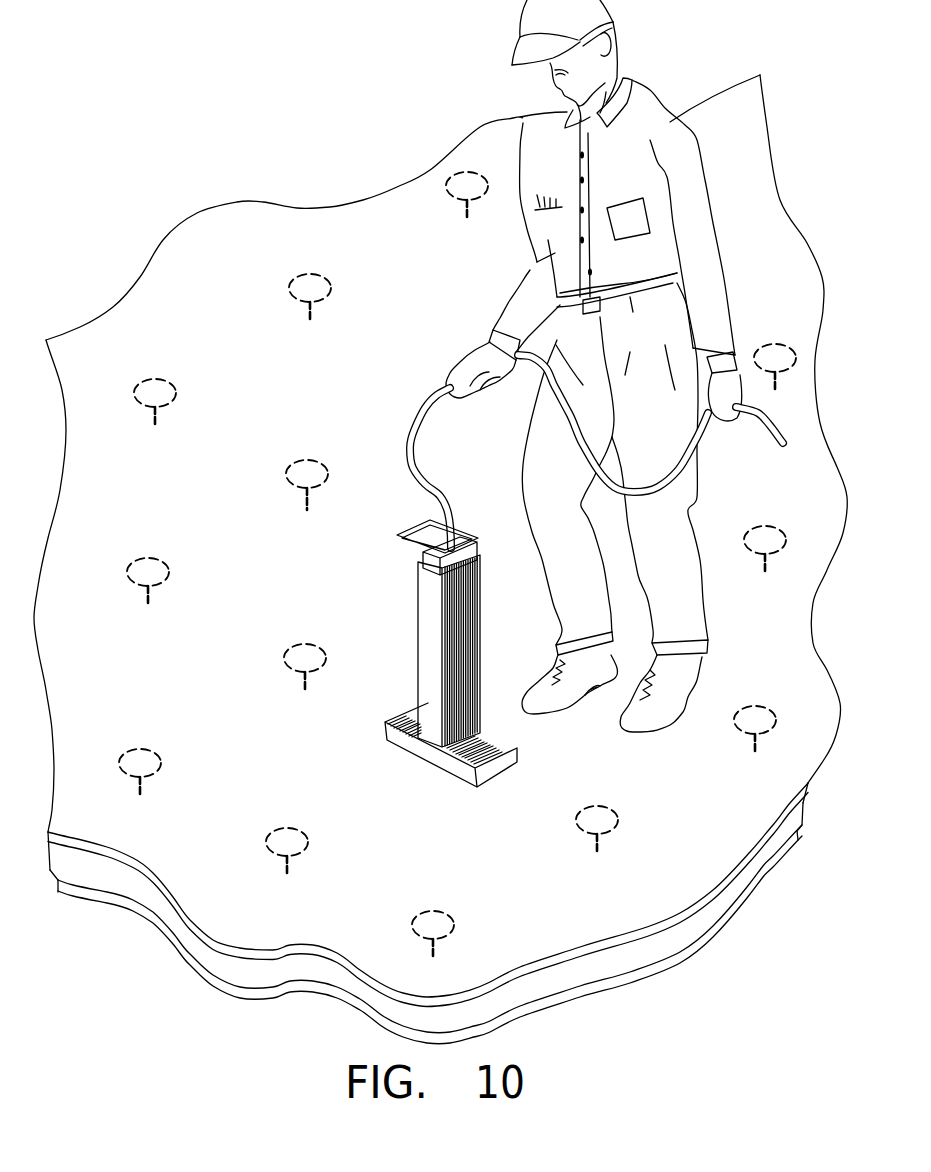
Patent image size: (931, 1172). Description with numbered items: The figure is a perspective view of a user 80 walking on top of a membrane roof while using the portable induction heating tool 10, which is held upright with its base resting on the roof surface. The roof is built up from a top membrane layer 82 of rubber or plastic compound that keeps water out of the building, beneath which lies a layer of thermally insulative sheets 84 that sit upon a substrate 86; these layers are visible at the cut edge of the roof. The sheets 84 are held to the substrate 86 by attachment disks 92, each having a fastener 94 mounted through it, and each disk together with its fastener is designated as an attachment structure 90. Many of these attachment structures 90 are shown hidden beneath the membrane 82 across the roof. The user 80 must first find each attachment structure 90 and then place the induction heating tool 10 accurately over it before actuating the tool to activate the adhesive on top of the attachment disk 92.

The induction heating tool 10 is at (405, 601).
The user 80 is at (500, 47).
The top membrane layer 82 is at (357, 915).
The thermally insulative sheets 84 is at (133, 887).
The substrate 86 is at (203, 973).
The attachment structure 90 is at (285, 463).
The attachment disk 92 is at (307, 463).
The fastener 94 is at (308, 505).